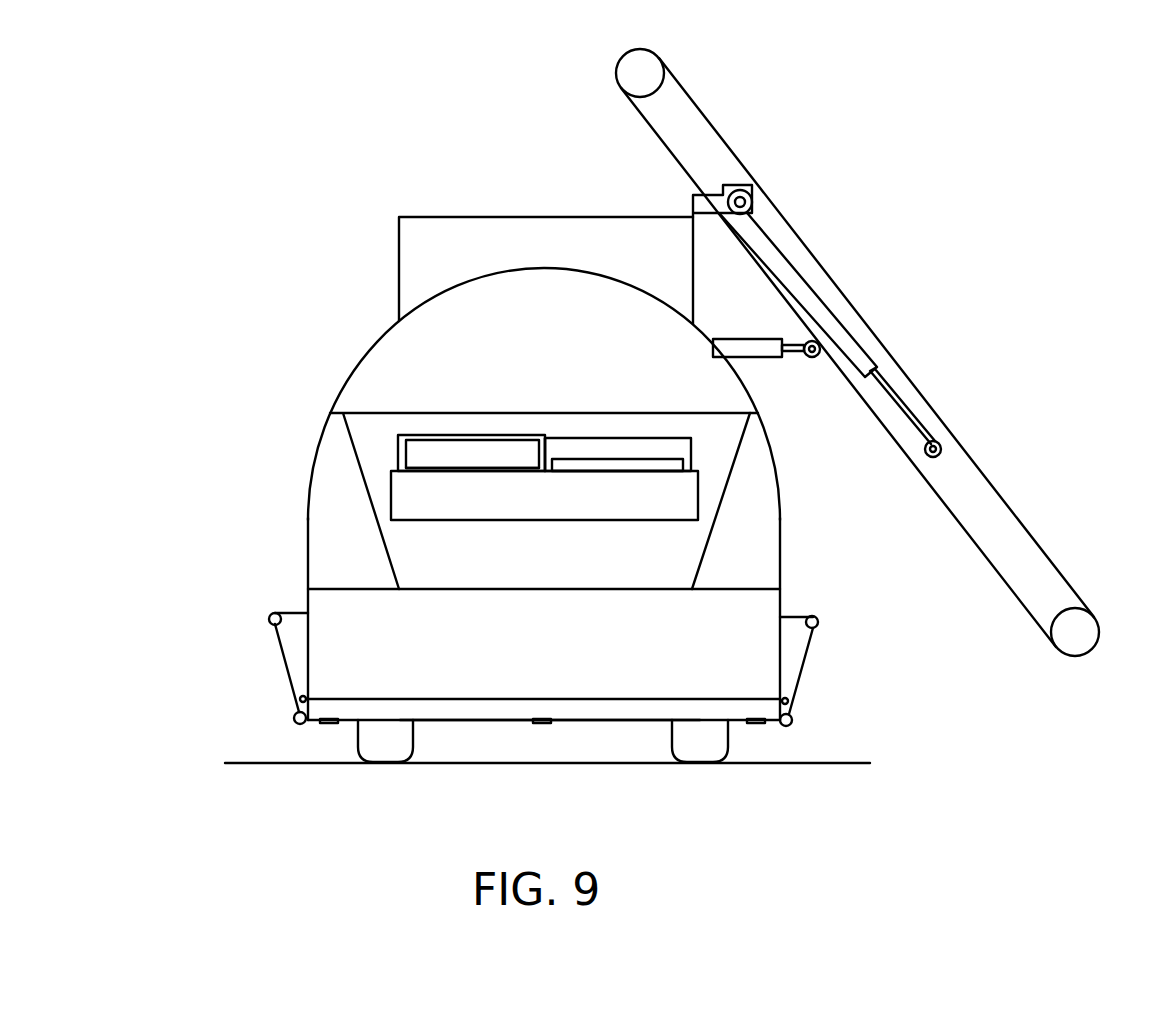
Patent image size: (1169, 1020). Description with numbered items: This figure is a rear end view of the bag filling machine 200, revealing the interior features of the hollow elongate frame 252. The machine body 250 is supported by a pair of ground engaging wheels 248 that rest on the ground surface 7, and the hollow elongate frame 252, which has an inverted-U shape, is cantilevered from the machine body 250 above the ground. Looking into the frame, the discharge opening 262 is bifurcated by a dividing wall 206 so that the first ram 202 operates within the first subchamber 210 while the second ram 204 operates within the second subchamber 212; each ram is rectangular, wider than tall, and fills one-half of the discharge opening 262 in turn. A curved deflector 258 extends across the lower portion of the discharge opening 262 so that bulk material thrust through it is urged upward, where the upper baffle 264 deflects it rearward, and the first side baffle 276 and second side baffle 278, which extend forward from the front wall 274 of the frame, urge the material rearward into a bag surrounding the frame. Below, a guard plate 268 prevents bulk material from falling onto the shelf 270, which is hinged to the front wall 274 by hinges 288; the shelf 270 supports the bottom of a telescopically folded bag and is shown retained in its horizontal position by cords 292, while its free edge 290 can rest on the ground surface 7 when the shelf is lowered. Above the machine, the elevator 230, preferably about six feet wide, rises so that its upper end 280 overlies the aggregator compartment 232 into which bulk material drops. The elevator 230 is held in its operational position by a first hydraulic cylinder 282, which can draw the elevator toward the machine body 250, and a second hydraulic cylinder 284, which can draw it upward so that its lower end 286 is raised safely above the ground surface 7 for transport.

The ground surface 7 is at (838, 763).
The bag filling machine 200 is at (236, 709).
The first ram 202 is at (440, 450).
The second ram 204 is at (660, 462).
The dividing wall 206 is at (545, 442).
The first subchamber 210 is at (490, 452).
The second subchamber 212 is at (638, 448).
The elevator 230 is at (717, 127).
The aggregator compartment 232 is at (470, 237).
The ground engaging wheels 248 is at (382, 753).
The machine body 250 is at (693, 267).
The hollow elongate frame 252 is at (783, 478).
The curved deflector 258 is at (400, 497).
The discharge opening 262 is at (388, 447).
The upper baffle 264 is at (402, 363).
The guard plate 268 is at (717, 643).
The shelf 270 is at (460, 722).
The front wall 274 is at (373, 457).
The first side baffle 276 is at (755, 518).
The second side baffle 278 is at (322, 548).
The upper end 280 is at (627, 52).
The first hydraulic cylinder 282 is at (740, 340).
The second hydraulic cylinder 284 is at (822, 304).
The lower end 286 is at (1092, 650).
The hinges 288 is at (328, 723).
The free edge 290 is at (627, 722).
The cords 292 is at (283, 665).